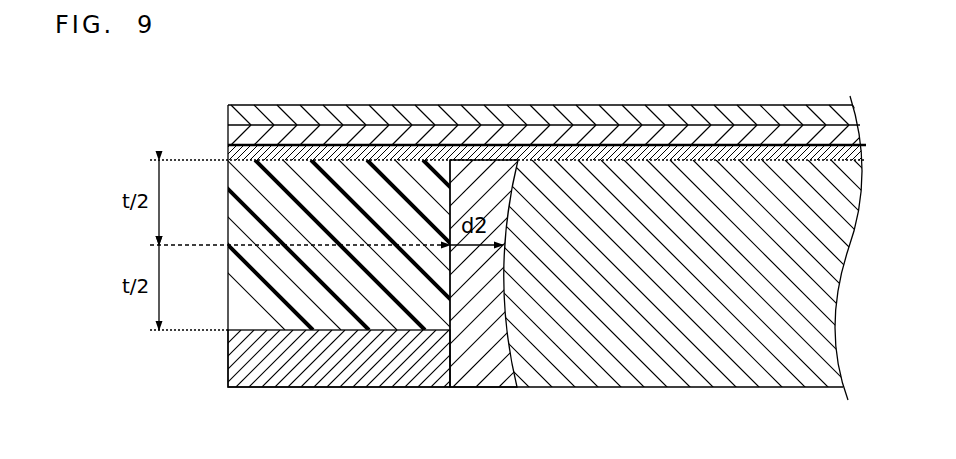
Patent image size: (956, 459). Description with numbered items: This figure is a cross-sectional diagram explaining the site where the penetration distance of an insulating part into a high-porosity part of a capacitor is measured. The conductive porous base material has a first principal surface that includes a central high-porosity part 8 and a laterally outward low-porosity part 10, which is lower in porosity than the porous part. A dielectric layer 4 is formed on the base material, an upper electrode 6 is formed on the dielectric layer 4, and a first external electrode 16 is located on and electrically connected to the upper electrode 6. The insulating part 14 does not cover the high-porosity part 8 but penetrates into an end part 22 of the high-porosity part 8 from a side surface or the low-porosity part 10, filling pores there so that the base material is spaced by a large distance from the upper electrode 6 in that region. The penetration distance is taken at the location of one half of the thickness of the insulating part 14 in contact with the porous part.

The dielectric layer 4 is at (762, 153).
The upper electrode 6 is at (660, 137).
The high-porosity part 8 is at (735, 378).
The low-porosity part 10 is at (325, 378).
The insulating part 14 is at (281, 168).
The first external electrode 16 is at (585, 112).
The end part 22 is at (478, 378).